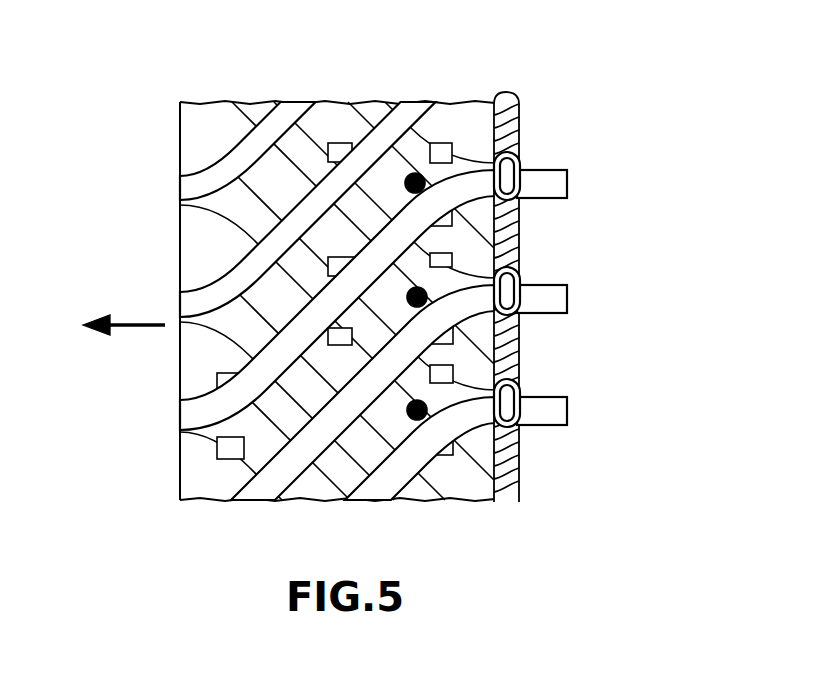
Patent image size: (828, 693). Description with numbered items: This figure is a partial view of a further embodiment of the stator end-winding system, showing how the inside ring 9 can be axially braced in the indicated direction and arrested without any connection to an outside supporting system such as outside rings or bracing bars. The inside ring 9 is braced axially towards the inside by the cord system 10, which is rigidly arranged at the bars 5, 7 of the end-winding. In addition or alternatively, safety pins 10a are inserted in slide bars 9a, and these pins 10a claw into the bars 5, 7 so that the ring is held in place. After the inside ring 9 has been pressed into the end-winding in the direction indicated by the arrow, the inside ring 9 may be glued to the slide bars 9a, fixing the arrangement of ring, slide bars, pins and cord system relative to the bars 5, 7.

The bar 5 is at (371, 284).
The bar 7 is at (371, 339).
The inside ring 9 is at (280, 192).
The slide bar 9a is at (443, 357).
The cord system 10 is at (517, 362).
The safety pin 10a is at (421, 175).